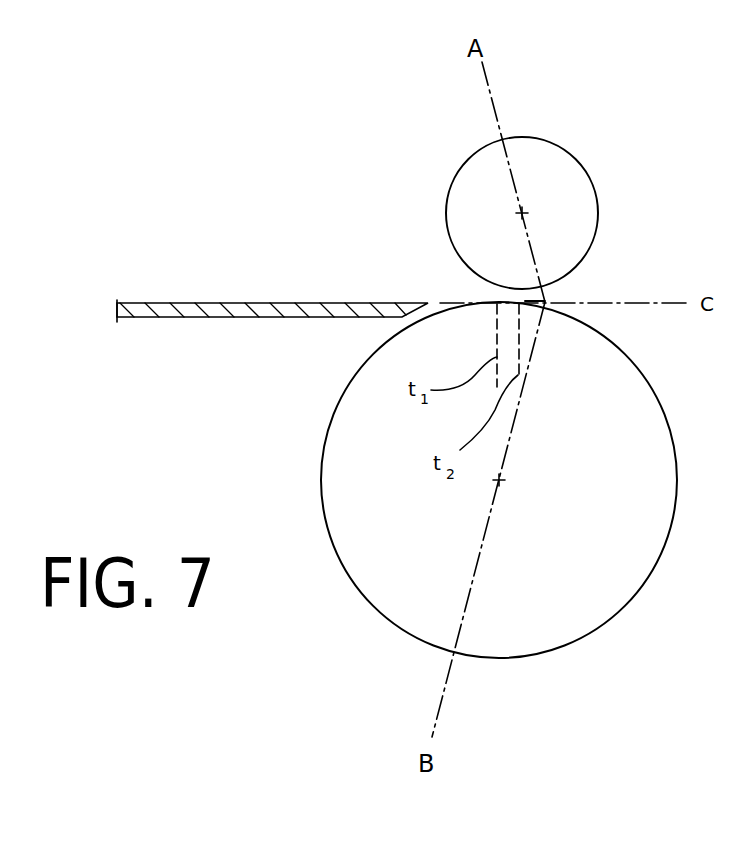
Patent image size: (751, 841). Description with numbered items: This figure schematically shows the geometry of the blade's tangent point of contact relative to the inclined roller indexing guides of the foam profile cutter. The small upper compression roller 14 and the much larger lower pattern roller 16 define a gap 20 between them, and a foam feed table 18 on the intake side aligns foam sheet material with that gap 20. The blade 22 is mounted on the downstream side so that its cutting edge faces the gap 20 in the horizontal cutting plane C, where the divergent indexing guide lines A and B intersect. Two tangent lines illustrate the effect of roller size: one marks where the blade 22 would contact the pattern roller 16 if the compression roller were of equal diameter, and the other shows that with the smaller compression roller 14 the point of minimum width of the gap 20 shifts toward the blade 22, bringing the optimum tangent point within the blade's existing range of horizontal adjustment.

The compression roller 14 is at (597, 212).
The pattern roller 16 is at (665, 548).
The foam feed table 18 is at (218, 302).
The gap 20 is at (474, 288).
The blade 22 is at (532, 302).